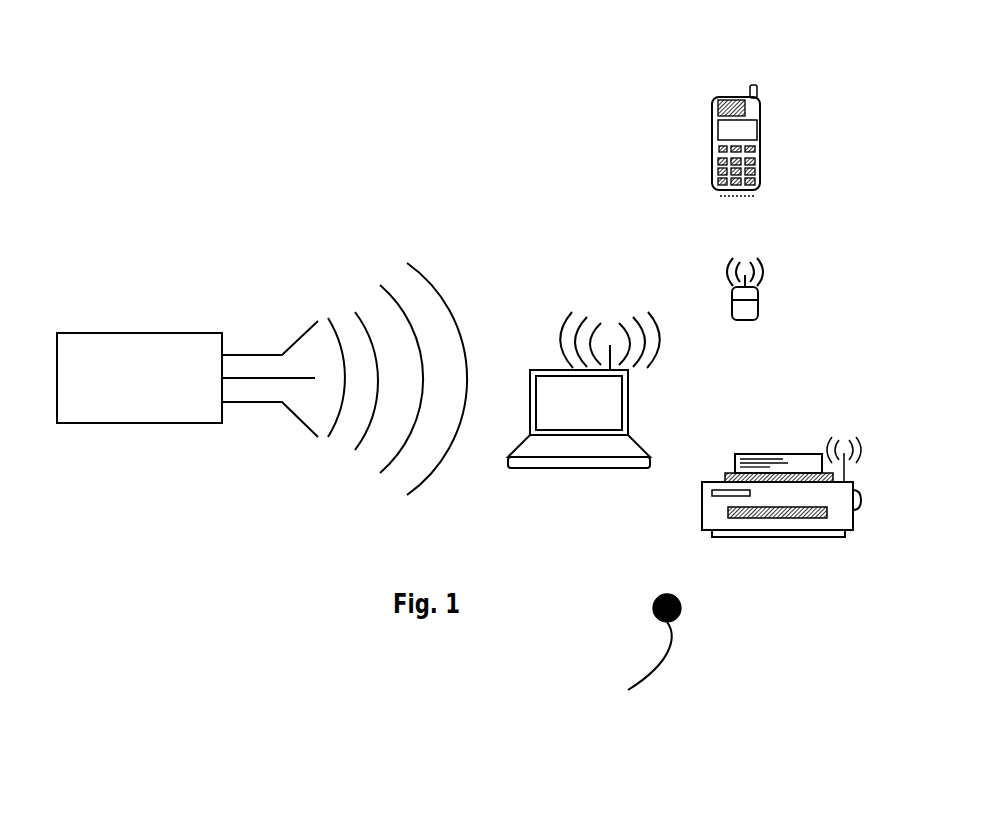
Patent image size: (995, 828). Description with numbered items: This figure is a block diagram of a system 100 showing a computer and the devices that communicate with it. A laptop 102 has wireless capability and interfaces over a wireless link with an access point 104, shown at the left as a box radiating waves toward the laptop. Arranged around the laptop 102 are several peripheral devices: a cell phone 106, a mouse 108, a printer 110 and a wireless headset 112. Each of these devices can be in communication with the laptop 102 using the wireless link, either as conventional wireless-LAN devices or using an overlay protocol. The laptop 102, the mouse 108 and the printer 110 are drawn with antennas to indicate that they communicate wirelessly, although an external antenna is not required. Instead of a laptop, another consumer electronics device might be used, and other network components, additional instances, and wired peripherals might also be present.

The wireless network system 100 is at (433, 48).
The laptop 102 is at (628, 397).
The access point 104 is at (137, 333).
The cell phone 106 is at (760, 170).
The mouse 108 is at (745, 320).
The printer 110 is at (861, 495).
The wireless headset 112 is at (681, 604).